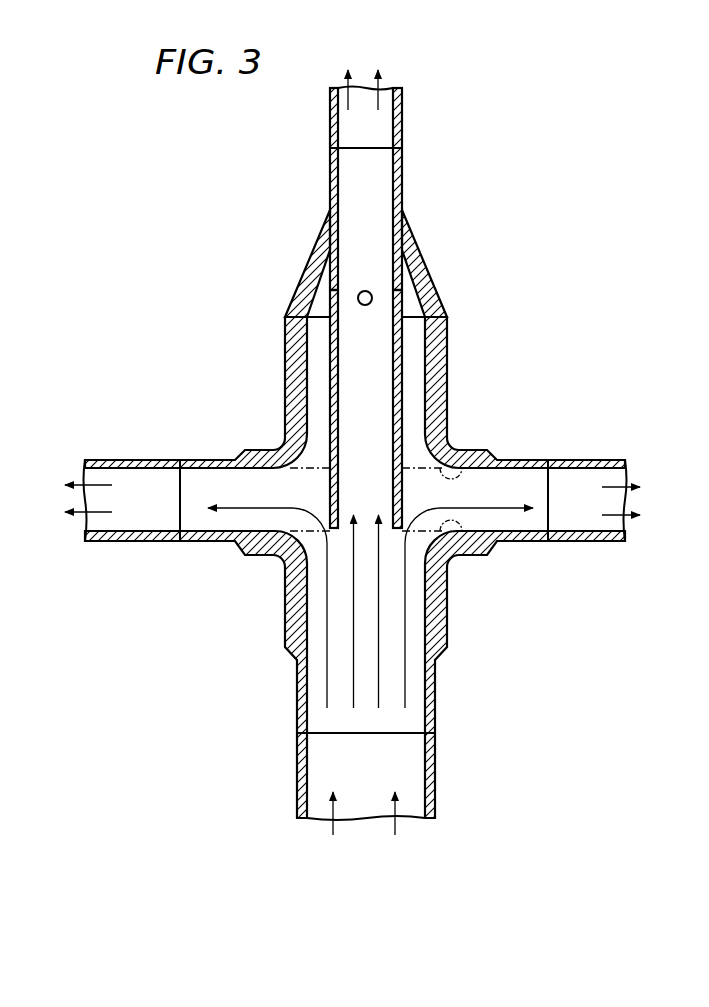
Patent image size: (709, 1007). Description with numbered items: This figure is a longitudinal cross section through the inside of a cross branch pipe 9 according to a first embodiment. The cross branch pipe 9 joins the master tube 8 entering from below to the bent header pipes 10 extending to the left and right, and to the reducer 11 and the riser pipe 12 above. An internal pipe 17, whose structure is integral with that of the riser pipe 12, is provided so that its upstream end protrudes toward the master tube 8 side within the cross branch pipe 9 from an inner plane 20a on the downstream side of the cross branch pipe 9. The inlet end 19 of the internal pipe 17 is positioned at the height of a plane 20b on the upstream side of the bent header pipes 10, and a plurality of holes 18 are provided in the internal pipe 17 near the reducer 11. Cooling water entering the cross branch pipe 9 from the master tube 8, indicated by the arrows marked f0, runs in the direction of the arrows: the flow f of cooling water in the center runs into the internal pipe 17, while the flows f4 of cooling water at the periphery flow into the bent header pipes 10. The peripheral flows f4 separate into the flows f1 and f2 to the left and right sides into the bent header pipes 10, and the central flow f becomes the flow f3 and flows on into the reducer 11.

The master tube 8 is at (297, 777).
The cross branch pipe 9 is at (295, 627).
The bent header pipes 10 is at (132, 466).
The reducer 11 is at (422, 287).
The riser pipe 12 is at (402, 125).
The internal pipe 17 is at (403, 372).
The holes 18 is at (332, 297).
The inlet end 19 is at (362, 528).
The inner plane on the downstream side 20a is at (468, 472).
The plane on the upstream side 20b is at (469, 531).
The flow of cooling water in the center f is at (382, 663).
The inlet flow f0 is at (364, 830).
The flow to one side f1 is at (75, 503).
The flow to the other side f2 is at (633, 505).
The flow into the reducer f3 is at (363, 75).
The flows of cooling water at the periphery f4 is at (405, 603).